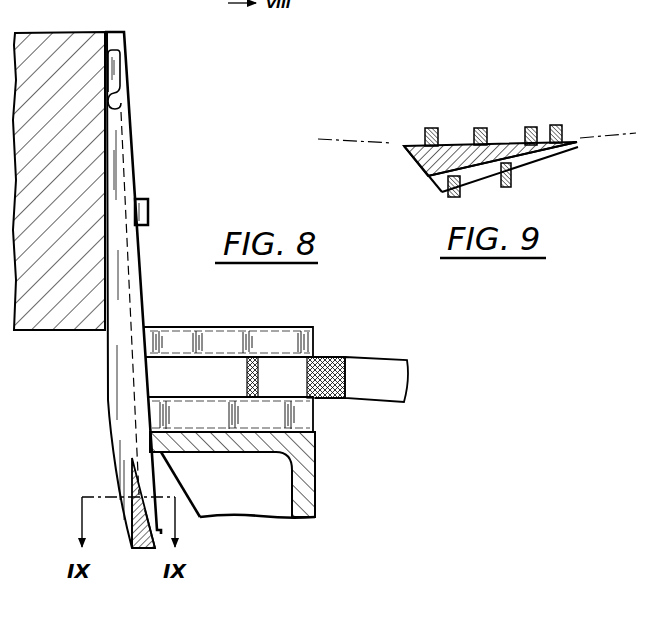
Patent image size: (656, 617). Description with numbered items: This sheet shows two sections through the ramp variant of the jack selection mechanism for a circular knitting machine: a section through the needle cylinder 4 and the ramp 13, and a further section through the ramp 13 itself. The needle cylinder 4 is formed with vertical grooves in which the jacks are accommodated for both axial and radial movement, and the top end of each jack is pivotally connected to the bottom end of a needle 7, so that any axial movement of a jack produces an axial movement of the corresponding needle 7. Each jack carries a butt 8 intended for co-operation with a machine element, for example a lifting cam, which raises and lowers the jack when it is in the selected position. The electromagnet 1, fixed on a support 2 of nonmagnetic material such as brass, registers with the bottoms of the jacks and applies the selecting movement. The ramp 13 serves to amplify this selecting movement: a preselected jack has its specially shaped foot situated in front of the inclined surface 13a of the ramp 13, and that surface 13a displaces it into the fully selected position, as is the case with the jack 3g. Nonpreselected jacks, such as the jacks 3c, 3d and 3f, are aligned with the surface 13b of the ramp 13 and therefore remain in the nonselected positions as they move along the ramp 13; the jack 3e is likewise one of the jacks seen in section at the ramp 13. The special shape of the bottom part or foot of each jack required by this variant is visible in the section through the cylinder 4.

In FIG. 8, the electromagnet 1 is at (329, 346).
In FIG. 8, the support 2 is at (316, 460).
In FIG. 9, the jack 3c is at (555, 125).
In FIG. 9, the jack 3d is at (528, 127).
In FIG. 9, the jack 3e is at (512, 177).
In FIG. 8, the jack 3f is at (112, 403).
In FIG. 9, the jack 3f is at (482, 128).
In FIG. 8, the jack 3g is at (138, 306).
In FIG. 9, the jack 3g is at (444, 191).
In FIG. 8, the needle cylinder 4 is at (58, 40).
In FIG. 8, the needle 7 is at (121, 61).
In FIG. 8, the butt 8 is at (151, 212).
In FIG. 8, the ramp 13 is at (136, 556).
In FIG. 9, the ramp 13 is at (416, 158).
In FIG. 8, the inclined surface 13a is at (156, 531).
In FIG. 9, the inclined surface 13a is at (477, 179).
In FIG. 8, the surface 13b is at (129, 537).
In FIG. 9, the surface 13b is at (449, 142).